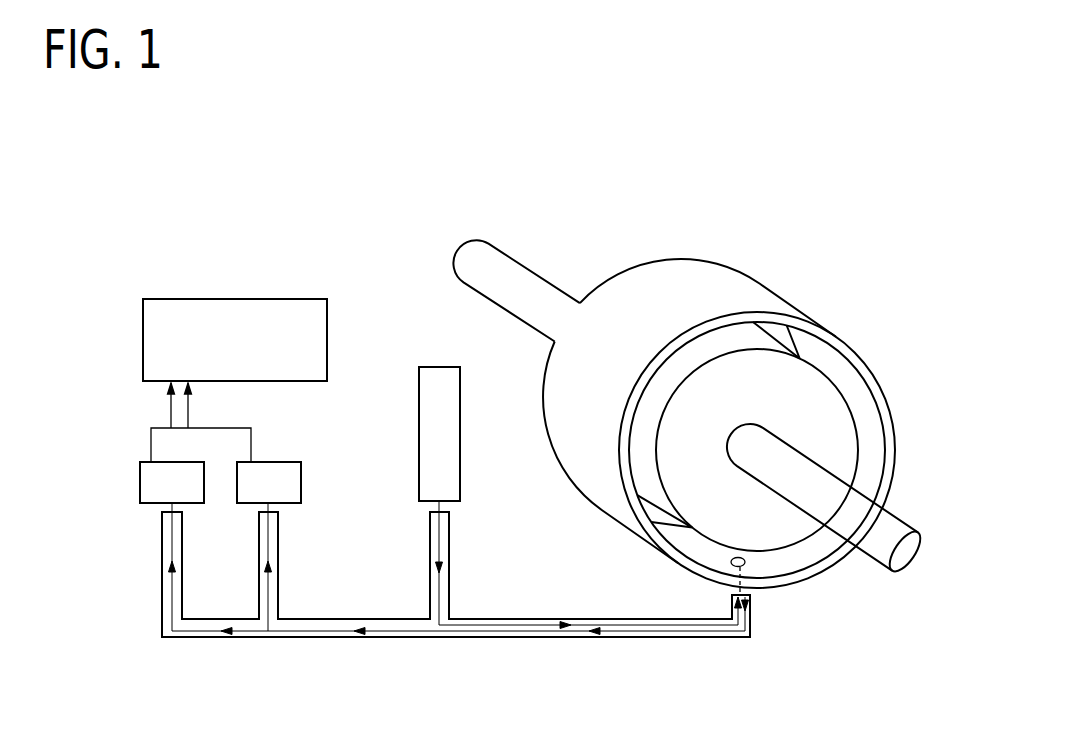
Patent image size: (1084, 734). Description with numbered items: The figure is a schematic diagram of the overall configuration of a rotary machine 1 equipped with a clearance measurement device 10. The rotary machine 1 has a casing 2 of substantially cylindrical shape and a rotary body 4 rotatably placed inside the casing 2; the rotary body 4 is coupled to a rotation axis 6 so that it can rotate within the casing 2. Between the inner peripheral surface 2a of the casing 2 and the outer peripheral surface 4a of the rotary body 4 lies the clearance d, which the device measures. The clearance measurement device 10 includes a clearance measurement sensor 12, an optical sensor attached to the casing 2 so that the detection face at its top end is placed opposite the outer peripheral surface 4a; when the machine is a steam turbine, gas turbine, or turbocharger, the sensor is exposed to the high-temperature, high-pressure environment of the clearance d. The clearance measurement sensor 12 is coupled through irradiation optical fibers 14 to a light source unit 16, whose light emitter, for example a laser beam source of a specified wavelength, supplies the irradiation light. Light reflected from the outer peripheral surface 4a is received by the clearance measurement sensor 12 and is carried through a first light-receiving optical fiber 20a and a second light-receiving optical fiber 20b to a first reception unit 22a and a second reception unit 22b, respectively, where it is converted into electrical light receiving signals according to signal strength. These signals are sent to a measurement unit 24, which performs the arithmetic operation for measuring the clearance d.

The rotary machine 1 is at (839, 328).
The clearance measurement device 10 is at (814, 203).
The casing 2 is at (880, 380).
The inner peripheral surface 2a is at (872, 420).
The rotary body 4 is at (858, 462).
The outer peripheral surface 4a is at (645, 475).
The rotation axis 6 is at (878, 562).
The clearance d is at (690, 547).
The clearance measurement sensor 12 is at (752, 564).
The irradiation optical fibers 14 is at (449, 572).
The light source unit 16 is at (436, 366).
The first light-receiving optical fiber 20a is at (162, 569).
The second light-receiving optical fiber 20b is at (278, 569).
The first reception unit 22a is at (140, 480).
The second reception unit 22b is at (301, 482).
The measurement unit 24 is at (232, 299).